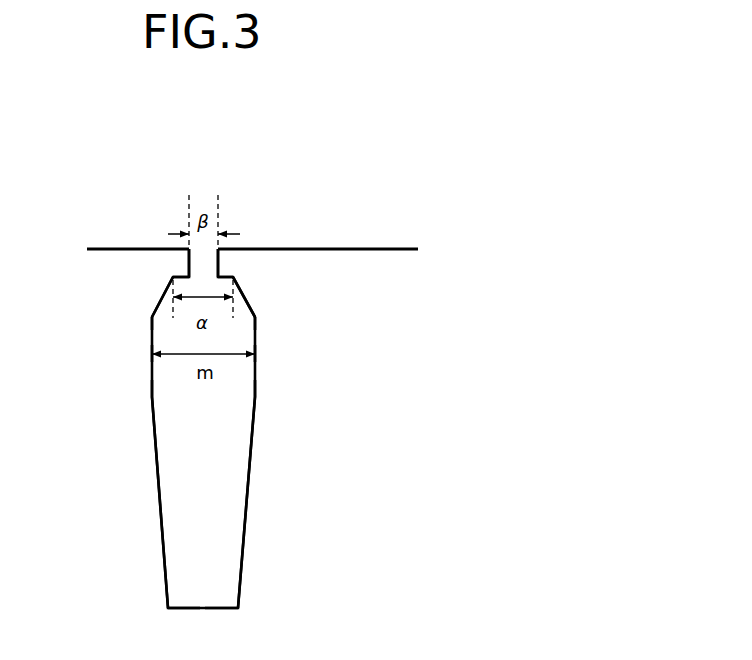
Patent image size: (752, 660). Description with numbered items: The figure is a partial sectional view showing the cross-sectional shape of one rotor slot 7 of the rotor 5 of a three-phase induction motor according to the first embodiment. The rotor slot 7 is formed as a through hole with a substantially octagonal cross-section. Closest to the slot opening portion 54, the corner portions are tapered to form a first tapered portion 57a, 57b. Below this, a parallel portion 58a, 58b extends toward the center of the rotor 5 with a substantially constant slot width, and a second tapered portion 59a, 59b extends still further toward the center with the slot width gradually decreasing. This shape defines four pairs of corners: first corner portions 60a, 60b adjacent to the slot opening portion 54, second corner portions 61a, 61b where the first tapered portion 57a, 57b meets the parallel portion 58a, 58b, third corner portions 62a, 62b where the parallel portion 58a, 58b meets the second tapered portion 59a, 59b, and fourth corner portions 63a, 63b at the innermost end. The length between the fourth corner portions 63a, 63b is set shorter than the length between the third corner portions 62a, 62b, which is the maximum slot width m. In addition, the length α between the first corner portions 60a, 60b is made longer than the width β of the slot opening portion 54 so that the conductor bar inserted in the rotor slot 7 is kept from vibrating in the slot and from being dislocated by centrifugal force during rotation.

The rotor 5 is at (209, 158).
The rotor slot 7 is at (381, 384).
The slot opening portion 54 is at (207, 262).
The first tapered portion 57a is at (158, 302).
The first tapered portion 57b is at (247, 292).
The parallel portion 58a is at (152, 354).
The parallel portion 58b is at (255, 352).
The second tapered portion 59a is at (161, 520).
The second tapered portion 59b is at (245, 545).
The first corner portion 60a is at (172, 278).
The first corner portion 60b is at (233, 277).
The second corner portion 61a is at (152, 317).
The second corner portion 61b is at (255, 317).
The third corner portion 62a is at (152, 397).
The third corner portion 62b is at (255, 390).
The fourth corner portion 63a is at (168, 608).
The fourth corner portion 63b is at (238, 608).